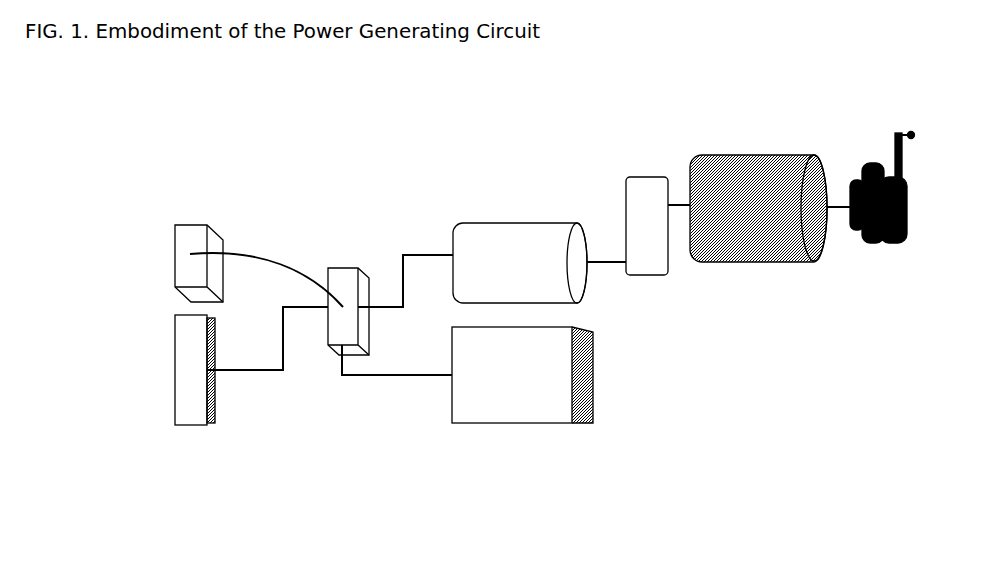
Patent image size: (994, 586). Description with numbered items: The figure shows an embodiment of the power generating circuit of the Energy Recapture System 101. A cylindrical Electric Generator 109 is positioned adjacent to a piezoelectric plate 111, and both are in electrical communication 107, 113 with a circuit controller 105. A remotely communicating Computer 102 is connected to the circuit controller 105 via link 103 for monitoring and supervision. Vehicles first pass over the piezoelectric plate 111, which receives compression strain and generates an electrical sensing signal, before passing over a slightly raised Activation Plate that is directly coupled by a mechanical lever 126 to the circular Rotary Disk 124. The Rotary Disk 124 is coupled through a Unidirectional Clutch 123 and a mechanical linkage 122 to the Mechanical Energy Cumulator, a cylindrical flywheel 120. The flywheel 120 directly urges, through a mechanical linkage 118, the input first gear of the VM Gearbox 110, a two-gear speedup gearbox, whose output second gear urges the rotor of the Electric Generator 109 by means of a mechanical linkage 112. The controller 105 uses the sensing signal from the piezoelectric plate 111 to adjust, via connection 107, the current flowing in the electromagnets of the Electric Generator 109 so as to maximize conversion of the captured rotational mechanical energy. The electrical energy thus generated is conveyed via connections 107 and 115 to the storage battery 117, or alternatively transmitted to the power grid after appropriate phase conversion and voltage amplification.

The Energy Recapture System 101 is at (145, 200).
The remotely communicating Computer 102 is at (175, 263).
The electrical communication link 103 is at (265, 250).
The circuit controller 105 is at (352, 268).
The electrical communication 107 is at (403, 255).
The Electric Generator 109 is at (515, 223).
The VM Gearbox 110 is at (650, 177).
The piezoelectric plate 111 is at (520, 423).
The mechanical linkage 112 is at (608, 262).
The electrical communication 113 is at (383, 375).
The electrical connection 115 is at (283, 370).
The storage battery 117 is at (175, 370).
The mechanical linkage 118 is at (683, 205).
The cylindrical flywheel 120 is at (758, 155).
The mechanical linkage 122 is at (833, 207).
The Unidirectional Clutch 123 is at (858, 233).
The Rotary Disk 124 is at (883, 243).
The mechanical lever 126 is at (892, 133).